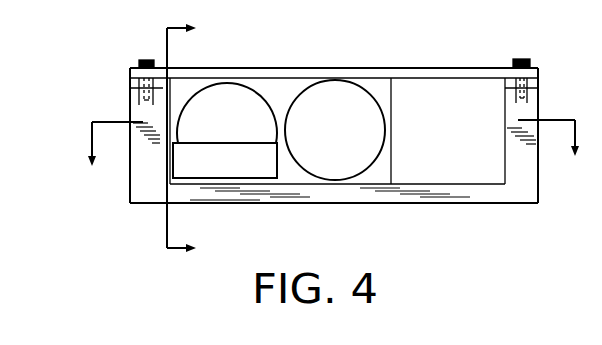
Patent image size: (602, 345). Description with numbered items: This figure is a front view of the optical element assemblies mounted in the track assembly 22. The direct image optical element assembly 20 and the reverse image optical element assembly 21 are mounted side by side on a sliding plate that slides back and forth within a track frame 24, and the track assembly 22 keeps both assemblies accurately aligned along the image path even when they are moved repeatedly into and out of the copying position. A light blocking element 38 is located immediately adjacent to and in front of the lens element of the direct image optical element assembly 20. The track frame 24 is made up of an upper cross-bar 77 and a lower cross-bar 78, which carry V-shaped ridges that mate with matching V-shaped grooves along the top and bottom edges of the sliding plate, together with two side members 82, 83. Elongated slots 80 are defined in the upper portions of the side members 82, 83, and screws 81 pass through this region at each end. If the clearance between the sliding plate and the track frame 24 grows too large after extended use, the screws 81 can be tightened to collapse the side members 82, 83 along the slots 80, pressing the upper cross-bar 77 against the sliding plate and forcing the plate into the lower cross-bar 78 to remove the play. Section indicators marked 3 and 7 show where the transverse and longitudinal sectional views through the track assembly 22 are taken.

The direct image optical element assembly 20 is at (218, 82).
The reverse image optical element assembly 21 is at (336, 80).
The track assembly 22 is at (124, 84).
The track frame 24 is at (264, 87).
The light blocking element 38 is at (252, 165).
The upper cross-bar 77 is at (386, 68).
The lower cross-bar 78 is at (490, 194).
The elongated slots 80 is at (140, 84).
The screws 81 is at (147, 60).
The side member 82 is at (132, 108).
The side member 83 is at (505, 157).
The section line 3- 3 is at (333, 154).
The section line 7- 7 is at (187, 139).